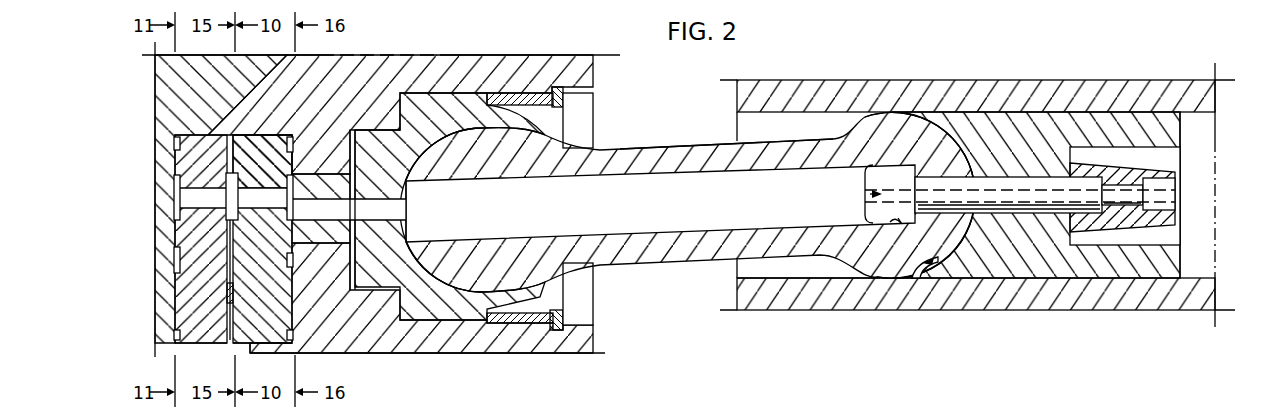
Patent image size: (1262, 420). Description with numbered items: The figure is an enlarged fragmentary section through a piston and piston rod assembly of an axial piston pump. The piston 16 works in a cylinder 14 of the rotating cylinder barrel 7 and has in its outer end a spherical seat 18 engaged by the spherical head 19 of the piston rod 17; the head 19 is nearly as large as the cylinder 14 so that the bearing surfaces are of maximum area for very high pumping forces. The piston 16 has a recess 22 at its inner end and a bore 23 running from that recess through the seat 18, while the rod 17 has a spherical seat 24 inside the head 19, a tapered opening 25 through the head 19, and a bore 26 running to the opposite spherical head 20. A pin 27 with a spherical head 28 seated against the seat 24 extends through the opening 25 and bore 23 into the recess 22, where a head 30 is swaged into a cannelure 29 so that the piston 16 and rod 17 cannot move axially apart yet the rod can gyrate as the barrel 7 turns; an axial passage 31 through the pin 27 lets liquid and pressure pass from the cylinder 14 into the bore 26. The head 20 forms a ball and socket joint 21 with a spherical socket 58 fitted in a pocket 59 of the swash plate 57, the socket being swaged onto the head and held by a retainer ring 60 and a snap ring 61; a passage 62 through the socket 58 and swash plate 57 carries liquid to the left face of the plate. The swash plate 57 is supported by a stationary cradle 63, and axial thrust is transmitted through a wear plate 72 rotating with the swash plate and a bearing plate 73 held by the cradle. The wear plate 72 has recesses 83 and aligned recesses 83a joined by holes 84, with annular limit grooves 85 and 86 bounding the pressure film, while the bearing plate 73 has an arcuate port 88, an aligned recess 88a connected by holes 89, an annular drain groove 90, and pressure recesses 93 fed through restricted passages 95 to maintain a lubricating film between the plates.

The cylinder barrel 7 is at (1072, 300).
The cylinder 14 is at (748, 266).
The piston 16 is at (1000, 273).
The piston rod 17 is at (656, 252).
The spherical seat 18 is at (916, 268).
The spherical head 19 is at (901, 120).
The spherical head 20 is at (487, 164).
The ball and socket joint 21 is at (497, 333).
The recess 22 is at (1140, 240).
The bore 23 is at (1042, 184).
The spherical seat 24 is at (892, 228).
The tapered opening 25 is at (973, 174).
The bore 26 is at (663, 183).
The pin 27 is at (1030, 211).
The spherical head 28 is at (866, 210).
The cannelure 29 is at (1133, 173).
The head 30 is at (1163, 221).
The passage 31 is at (868, 194).
The swash plate 57 is at (412, 345).
The spherical socket 58 is at (452, 105).
The pocket 59 is at (580, 314).
The retainer ring 60 is at (527, 320).
The snap ring 61 is at (558, 92).
The passage 62 is at (388, 209).
The cradle 63 is at (168, 94).
The wear plate 72 is at (254, 338).
The bearing plate 73 is at (219, 335).
The recess 83 is at (243, 178).
The recess 83a is at (288, 150).
The hole 84 is at (277, 204).
The limit groove 85 is at (288, 268).
The limit groove 86 is at (290, 145).
The arcuate port 88 is at (220, 186).
The arcuate recess 88a is at (173, 184).
The hole 89 is at (190, 203).
The annular groove 90 is at (173, 258).
The pressure recess 93 is at (226, 296).
The restricted passage 95 is at (231, 251).